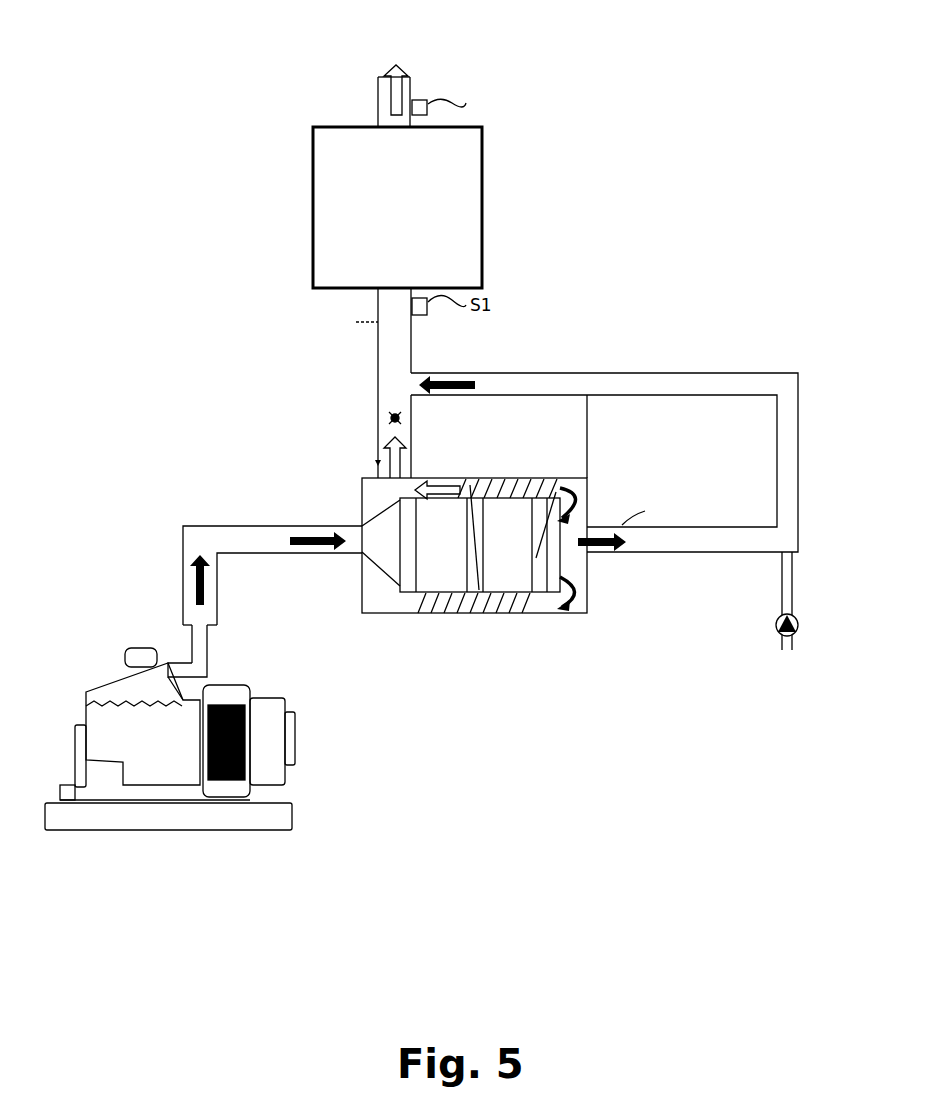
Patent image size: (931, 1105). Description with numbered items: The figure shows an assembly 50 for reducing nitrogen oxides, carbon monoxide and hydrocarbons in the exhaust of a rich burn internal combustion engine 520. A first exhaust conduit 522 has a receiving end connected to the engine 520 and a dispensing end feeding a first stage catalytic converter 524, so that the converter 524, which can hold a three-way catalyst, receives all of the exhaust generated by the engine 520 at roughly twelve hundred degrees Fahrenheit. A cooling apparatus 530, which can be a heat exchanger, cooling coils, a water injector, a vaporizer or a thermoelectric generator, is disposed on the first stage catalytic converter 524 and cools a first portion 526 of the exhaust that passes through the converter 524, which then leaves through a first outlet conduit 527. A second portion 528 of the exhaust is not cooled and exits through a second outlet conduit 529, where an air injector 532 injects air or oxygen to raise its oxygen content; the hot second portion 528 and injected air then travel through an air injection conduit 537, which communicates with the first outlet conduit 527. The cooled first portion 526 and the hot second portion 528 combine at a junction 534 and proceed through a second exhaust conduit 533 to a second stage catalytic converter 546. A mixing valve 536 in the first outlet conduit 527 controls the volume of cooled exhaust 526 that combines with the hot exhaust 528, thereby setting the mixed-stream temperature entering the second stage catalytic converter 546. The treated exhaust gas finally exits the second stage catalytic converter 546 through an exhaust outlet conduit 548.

The assembly 50 is at (148, 160).
The internal combustion engine 520 is at (86, 702).
The first exhaust conduit 522 is at (183, 553).
The first stage catalytic converter 524 is at (446, 614).
The first portion of engine exhaust 526 is at (410, 455).
The first outlet conduit 527 is at (378, 428).
The second portion of engine exhaust 528 is at (609, 554).
The second outlet conduit 529 is at (712, 554).
The cooling apparatus 530 is at (522, 600).
The air injector 532 is at (798, 626).
The second exhaust conduit 533 is at (378, 340).
The junction 534 is at (378, 391).
The mixing valve 536 is at (383, 425).
The air injection conduit 537 is at (798, 424).
The second stage catalytic converter 546 is at (313, 122).
The exhaust outlet conduit 548 is at (378, 94).